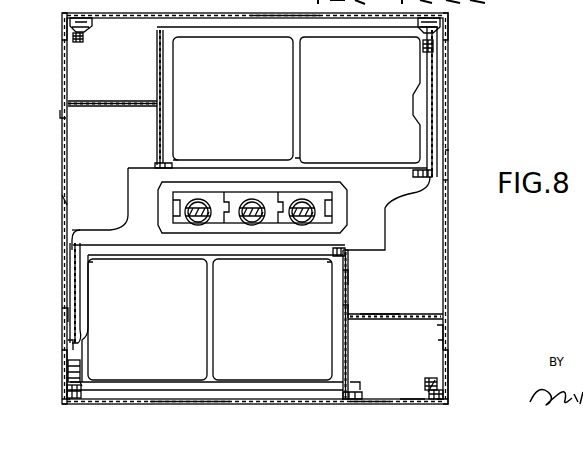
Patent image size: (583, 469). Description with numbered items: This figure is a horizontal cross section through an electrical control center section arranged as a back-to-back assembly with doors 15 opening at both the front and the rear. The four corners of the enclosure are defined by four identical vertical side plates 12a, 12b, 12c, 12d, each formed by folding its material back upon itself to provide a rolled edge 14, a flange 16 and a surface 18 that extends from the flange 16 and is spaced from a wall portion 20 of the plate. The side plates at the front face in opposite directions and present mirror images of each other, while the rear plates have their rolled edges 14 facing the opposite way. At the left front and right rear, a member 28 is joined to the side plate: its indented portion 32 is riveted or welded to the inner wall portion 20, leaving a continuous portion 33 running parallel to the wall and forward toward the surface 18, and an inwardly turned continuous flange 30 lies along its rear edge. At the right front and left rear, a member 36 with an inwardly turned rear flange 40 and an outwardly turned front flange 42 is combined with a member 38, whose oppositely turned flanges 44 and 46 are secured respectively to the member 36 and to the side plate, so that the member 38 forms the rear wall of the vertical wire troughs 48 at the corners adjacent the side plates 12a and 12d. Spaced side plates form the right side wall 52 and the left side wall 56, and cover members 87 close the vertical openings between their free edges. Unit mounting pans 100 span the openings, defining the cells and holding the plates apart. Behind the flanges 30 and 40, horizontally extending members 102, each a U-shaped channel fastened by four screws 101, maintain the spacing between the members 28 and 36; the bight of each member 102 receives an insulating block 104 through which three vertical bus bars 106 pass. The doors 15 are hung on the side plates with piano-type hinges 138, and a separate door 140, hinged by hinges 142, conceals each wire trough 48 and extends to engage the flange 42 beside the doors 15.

The side plate 12a is at (446, 366).
The side plate 12b is at (63, 370).
The side plate 12c is at (448, 70).
The side plate 12d is at (65, 68).
The rolled edge 14 is at (60, 402).
The door 15 is at (187, 402).
The flange 16 is at (62, 392).
The surface 18 is at (70, 364).
The wall portion 20 is at (62, 345).
The member 28 is at (70, 265).
The inwardly turned continuous flange 30 is at (72, 230).
The indented portion 32 is at (62, 318).
The continuous portion 33 is at (82, 333).
The member 36 is at (348, 278).
The member 38 is at (380, 318).
The inwardly turned flange 40 is at (346, 252).
The flange 42 is at (358, 389).
The flange 44 is at (348, 312).
The flange 46 is at (437, 333).
The vertical wire trough 48 is at (118, 70).
The right side wall 52 is at (447, 197).
The left side wall 56 is at (62, 200).
The cover member 87 is at (62, 155).
The unit mounting pan 100 is at (352, 108).
The screw 101 is at (182, 158).
The member 102 is at (384, 220).
The insulating block 104 is at (347, 205).
The bus bar 106 is at (302, 200).
The piano-type hinge 138 is at (80, 385).
The door 140 is at (370, 405).
The hinge 142 is at (416, 405).